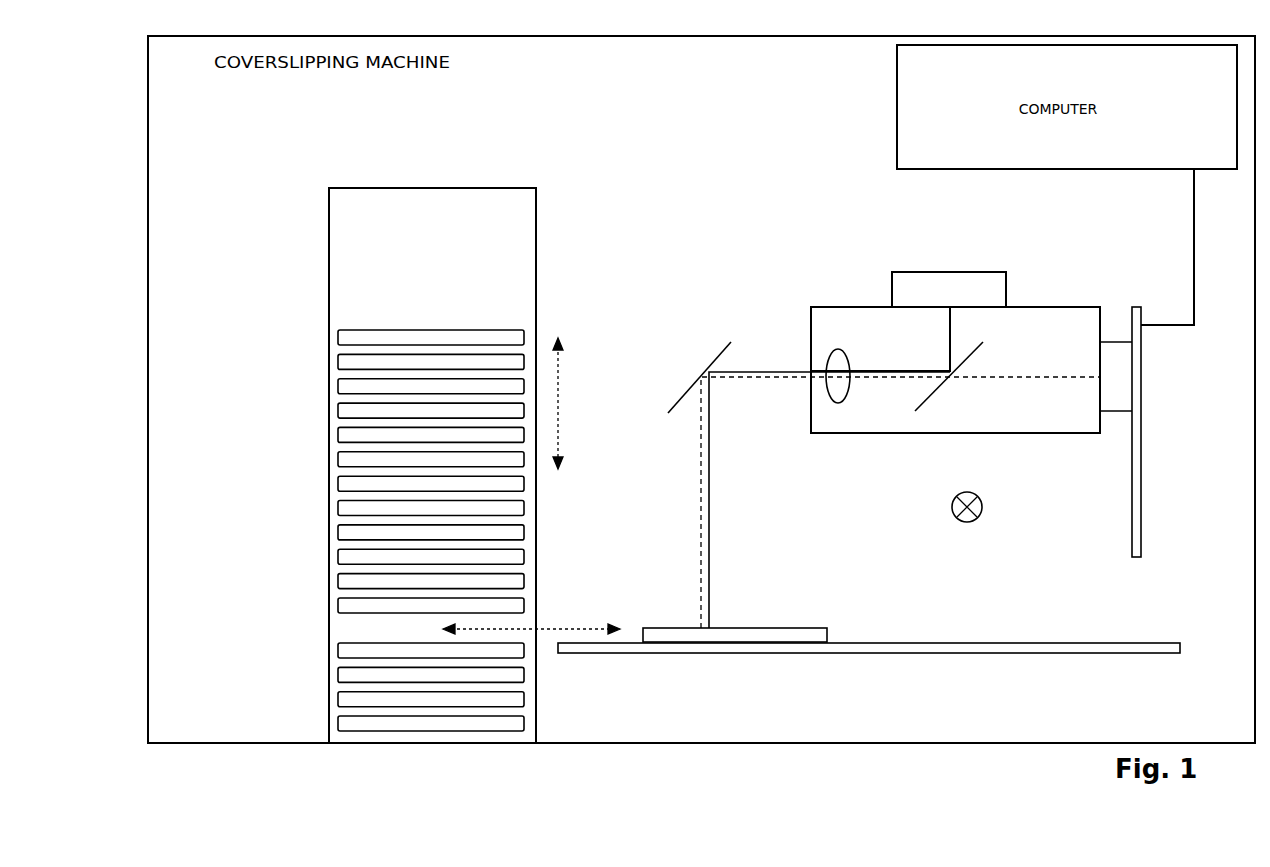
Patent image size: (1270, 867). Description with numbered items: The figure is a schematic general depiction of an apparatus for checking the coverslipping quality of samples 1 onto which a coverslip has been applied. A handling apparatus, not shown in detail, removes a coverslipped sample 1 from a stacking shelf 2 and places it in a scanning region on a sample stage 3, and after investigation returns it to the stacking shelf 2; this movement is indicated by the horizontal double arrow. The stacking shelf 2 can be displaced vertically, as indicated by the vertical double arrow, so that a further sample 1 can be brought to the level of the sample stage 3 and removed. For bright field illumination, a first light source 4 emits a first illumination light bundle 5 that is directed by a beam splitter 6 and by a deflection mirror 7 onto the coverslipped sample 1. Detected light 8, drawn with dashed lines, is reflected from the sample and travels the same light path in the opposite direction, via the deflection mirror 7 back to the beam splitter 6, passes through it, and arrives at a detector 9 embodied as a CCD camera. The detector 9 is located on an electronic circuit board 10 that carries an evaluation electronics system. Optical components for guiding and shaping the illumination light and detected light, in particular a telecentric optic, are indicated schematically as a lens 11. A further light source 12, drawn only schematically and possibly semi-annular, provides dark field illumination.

The sample 1 is at (346, 580).
The stacking shelf 2 is at (559, 202).
The sample stage 3 is at (849, 651).
The first light source 4 is at (962, 285).
The first illumination light bundle 5 is at (948, 355).
The beam splitter 6 is at (943, 395).
The deflection mirror 7 is at (683, 397).
The detected light 8 is at (1027, 377).
The detector 9 is at (1117, 352).
The electronic circuit board 10 is at (1141, 440).
The lens 11 is at (834, 360).
The further light source 12 is at (982, 512).